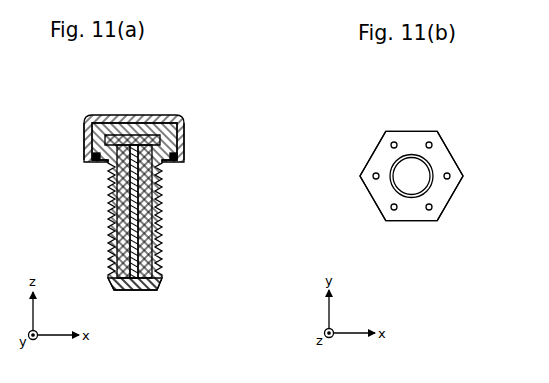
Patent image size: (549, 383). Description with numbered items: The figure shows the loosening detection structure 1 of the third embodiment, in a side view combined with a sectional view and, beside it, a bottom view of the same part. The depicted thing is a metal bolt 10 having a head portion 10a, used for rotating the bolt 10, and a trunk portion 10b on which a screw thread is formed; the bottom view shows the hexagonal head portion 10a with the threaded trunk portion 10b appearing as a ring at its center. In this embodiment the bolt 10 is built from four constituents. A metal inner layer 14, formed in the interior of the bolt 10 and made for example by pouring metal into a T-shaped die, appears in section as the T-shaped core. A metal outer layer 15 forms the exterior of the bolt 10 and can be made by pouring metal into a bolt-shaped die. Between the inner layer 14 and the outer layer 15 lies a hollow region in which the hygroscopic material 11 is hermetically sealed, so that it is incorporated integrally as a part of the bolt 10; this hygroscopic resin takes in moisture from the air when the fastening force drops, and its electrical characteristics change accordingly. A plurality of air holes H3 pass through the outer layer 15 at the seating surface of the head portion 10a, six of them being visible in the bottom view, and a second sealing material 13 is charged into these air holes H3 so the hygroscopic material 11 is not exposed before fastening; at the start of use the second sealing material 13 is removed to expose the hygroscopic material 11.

In FIG. 11A, the loosening detection structure 1 is at (138, 73).
In FIG. 11B, the loosening detection structure 1 is at (417, 73).
In FIG. 11A, the bolt 10 is at (110, 116).
In FIG. 11B, the bolt 10 is at (413, 131).
In FIG. 11A, the head portion 10a is at (138, 116).
In FIG. 11B, the head portion 10a is at (382, 137).
In FIG. 11A, the trunk portion 10b is at (159, 283).
In FIG. 11B, the trunk portion 10b is at (400, 168).
In FIG. 11A, the hygroscopic material 11 is at (183, 124).
In FIG. 11A, the second sealing material 13 is at (98, 162).
In FIG. 11B, the second sealing material 13 is at (447, 172).
In FIG. 11A, the inner layer 14 is at (146, 138).
In FIG. 11A, the outer layer 15 is at (163, 240).
In FIG. 11A, the air holes H3 is at (86, 139).